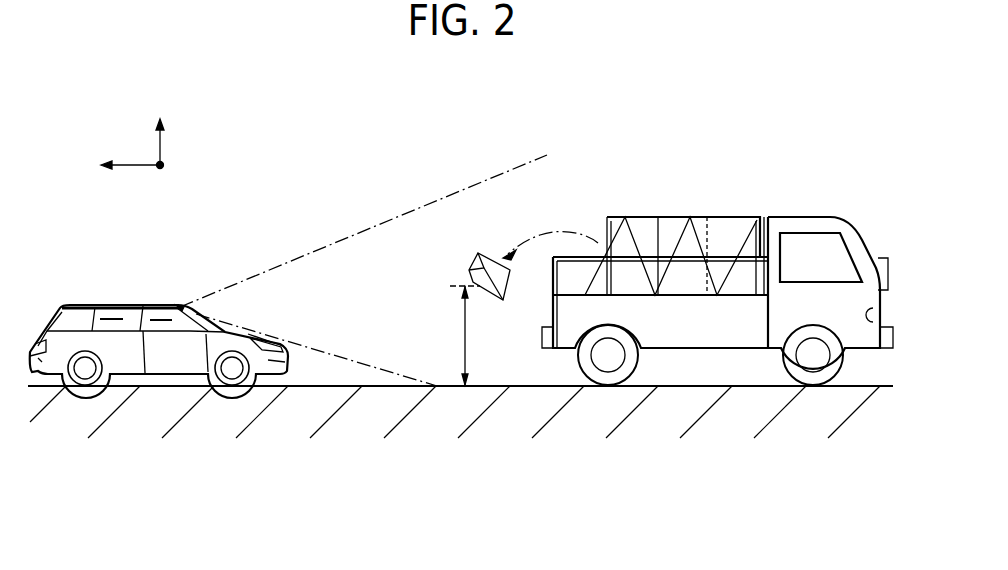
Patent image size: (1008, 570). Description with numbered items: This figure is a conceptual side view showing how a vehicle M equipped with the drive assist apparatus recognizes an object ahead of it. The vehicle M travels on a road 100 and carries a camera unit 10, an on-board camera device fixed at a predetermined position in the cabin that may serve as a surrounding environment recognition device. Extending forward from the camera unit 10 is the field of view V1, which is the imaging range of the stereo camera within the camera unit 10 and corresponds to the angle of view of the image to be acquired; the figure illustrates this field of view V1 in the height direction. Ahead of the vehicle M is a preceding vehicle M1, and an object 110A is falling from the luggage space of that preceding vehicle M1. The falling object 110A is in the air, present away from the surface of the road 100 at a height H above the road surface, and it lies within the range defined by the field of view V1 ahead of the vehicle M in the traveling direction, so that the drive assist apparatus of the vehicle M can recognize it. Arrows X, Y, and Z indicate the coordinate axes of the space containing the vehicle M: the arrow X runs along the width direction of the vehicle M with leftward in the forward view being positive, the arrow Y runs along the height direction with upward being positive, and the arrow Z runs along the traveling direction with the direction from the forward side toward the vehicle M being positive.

The vehicle M is at (106, 305).
The camera unit 10 is at (177, 306).
The field of view V1 is at (416, 204).
The falling object 110A is at (481, 254).
The height H is at (459, 336).
The road 100 is at (673, 388).
The preceding vehicle M1 is at (805, 216).
The arrow X is at (162, 167).
The arrow Y is at (160, 124).
The arrow Z is at (112, 164).